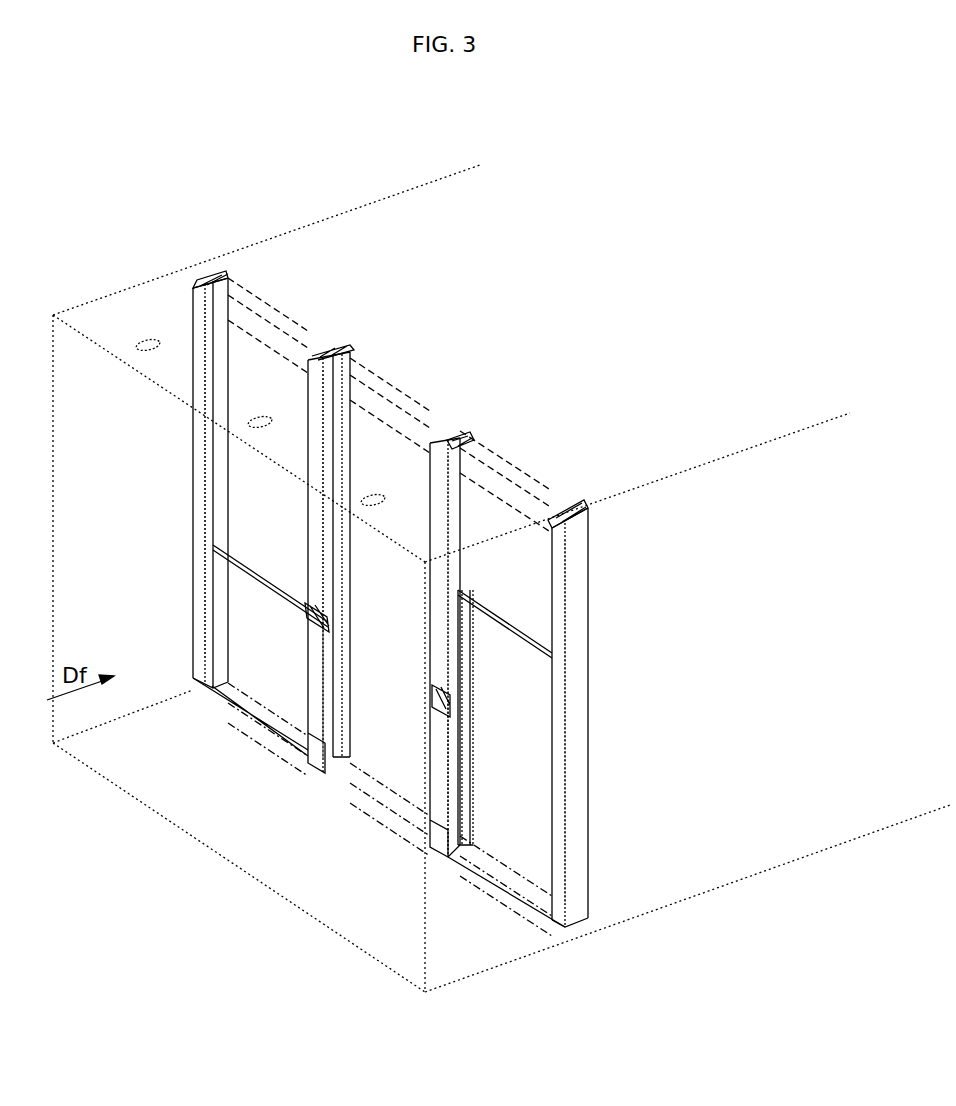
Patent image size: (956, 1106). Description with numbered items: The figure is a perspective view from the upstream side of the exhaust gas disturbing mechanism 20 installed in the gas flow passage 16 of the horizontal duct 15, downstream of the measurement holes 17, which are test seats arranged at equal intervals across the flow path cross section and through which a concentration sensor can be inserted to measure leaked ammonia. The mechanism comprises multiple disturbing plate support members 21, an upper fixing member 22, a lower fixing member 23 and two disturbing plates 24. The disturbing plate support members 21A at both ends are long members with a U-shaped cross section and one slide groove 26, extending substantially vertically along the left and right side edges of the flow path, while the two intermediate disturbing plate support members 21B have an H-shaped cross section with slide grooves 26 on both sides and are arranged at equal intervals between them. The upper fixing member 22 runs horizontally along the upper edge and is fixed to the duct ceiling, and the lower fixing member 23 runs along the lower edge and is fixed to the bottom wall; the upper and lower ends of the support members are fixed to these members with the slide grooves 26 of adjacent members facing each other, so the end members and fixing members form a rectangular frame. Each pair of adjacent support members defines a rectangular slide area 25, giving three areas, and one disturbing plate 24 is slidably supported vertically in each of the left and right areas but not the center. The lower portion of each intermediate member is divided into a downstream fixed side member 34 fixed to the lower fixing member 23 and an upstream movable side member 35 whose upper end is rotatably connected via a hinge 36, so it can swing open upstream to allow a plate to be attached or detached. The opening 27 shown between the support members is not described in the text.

The horizontal duct 15 is at (288, 228).
The gas flow passage 16 is at (131, 432).
The measurement holes 17 is at (155, 337).
The exhaust gas disturbing mechanism 20 is at (196, 247).
The disturbing plate support members 21 is at (395, 580).
The disturbing plate support members at both ends 21A is at (193, 487).
The intermediate disturbing plate support members 21B is at (386, 450).
The upper fixing member 22 is at (520, 468).
The lower fixing member 23 is at (503, 907).
The disturbing plate 24 is at (258, 672).
The slide area 25 is at (283, 328).
The slide groove 26 is at (228, 280).
The opening 27 is at (253, 627).
The fixed side member 34 is at (350, 690).
The movable side member 35 is at (315, 648).
The hinge 36 is at (310, 597).